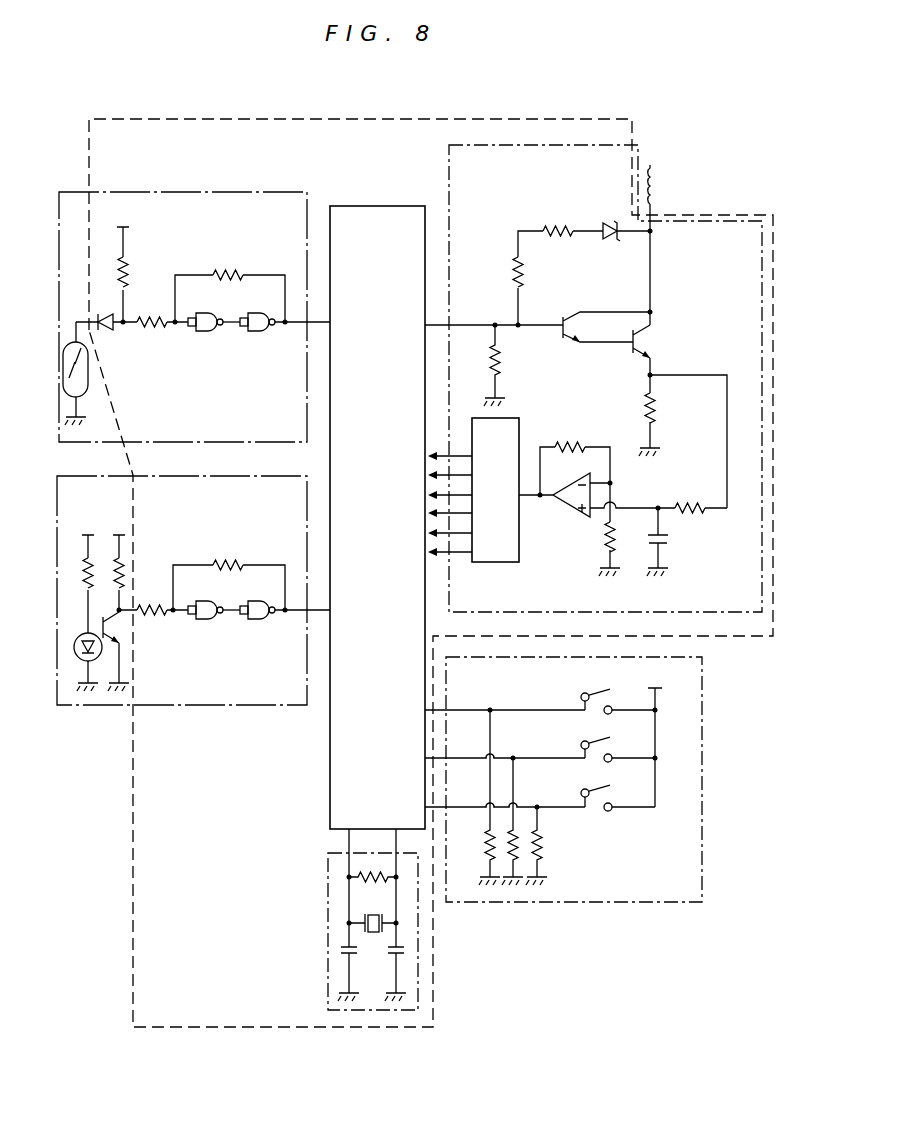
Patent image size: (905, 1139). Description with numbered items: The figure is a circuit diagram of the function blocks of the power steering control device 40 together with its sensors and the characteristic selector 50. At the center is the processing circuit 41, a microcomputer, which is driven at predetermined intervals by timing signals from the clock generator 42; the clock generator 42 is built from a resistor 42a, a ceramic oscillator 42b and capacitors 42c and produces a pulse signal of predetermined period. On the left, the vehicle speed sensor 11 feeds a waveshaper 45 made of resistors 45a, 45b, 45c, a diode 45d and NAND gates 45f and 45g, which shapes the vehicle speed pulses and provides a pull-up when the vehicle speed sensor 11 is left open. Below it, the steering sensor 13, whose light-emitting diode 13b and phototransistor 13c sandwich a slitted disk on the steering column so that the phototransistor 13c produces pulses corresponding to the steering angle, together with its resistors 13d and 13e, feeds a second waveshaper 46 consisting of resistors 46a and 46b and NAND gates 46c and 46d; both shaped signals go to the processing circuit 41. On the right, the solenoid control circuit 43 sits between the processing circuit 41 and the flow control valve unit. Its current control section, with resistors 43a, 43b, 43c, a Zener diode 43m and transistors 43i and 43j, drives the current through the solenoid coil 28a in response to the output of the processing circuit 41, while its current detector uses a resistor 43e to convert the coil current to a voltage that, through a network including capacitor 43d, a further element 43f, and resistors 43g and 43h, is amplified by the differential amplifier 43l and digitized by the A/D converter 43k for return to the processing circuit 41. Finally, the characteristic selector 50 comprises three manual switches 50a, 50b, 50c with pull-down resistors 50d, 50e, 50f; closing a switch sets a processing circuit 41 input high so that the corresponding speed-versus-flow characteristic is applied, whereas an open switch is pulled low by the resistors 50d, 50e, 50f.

The vehicle speed sensor 11 is at (74, 192).
The steering sensor 13 is at (73, 476).
The light-emitting diode 13b is at (95, 658).
The phototransistor 13c is at (118, 627).
The resistor 13d is at (90, 582).
The resistor 13e is at (117, 595).
The solenoid coil 28a is at (657, 193).
The power steering control device 40 is at (322, 118).
The processing circuit 41 is at (385, 206).
The clock generator 42 is at (418, 992).
The resistor 42a is at (360, 875).
The ceramic oscillator 42b is at (366, 920).
The capacitor 42c is at (341, 949).
The solenoid control circuit 43 is at (573, 144).
The resistor 43a is at (502, 353).
The resistor 43b is at (520, 282).
The resistor 43c is at (554, 226).
The capacitor 43d is at (668, 540).
The resistor 43e is at (653, 402).
The resistor 43f is at (684, 505).
The resistor 43g is at (578, 445).
The resistor 43h is at (605, 540).
The transistor 43i is at (572, 308).
The transistor 43j is at (653, 335).
The A/D converter 43k is at (497, 562).
The differential amplifier 43l is at (574, 510).
The Zener diode 43m is at (604, 222).
The waveshaper 45 is at (267, 192).
The resistor 45a is at (128, 273).
The resistor 45b is at (152, 314).
The resistor 45c is at (228, 272).
The diode 45d is at (111, 328).
The NAND gate 45f is at (206, 333).
The NAND gate 45g is at (260, 333).
The waveshaper 46 is at (228, 476).
The resistor 46a is at (163, 613).
The resistor 46b is at (228, 565).
The NAND gate 46c is at (204, 620).
The NAND gate 46d is at (255, 620).
The characteristic selector 50 is at (702, 792).
The manual switch 50a is at (580, 694).
The manual switch 50b is at (580, 742).
The manual switch 50c is at (580, 792).
The resistor 50d is at (487, 839).
The resistor 50e is at (518, 845).
The resistor 50f is at (541, 844).